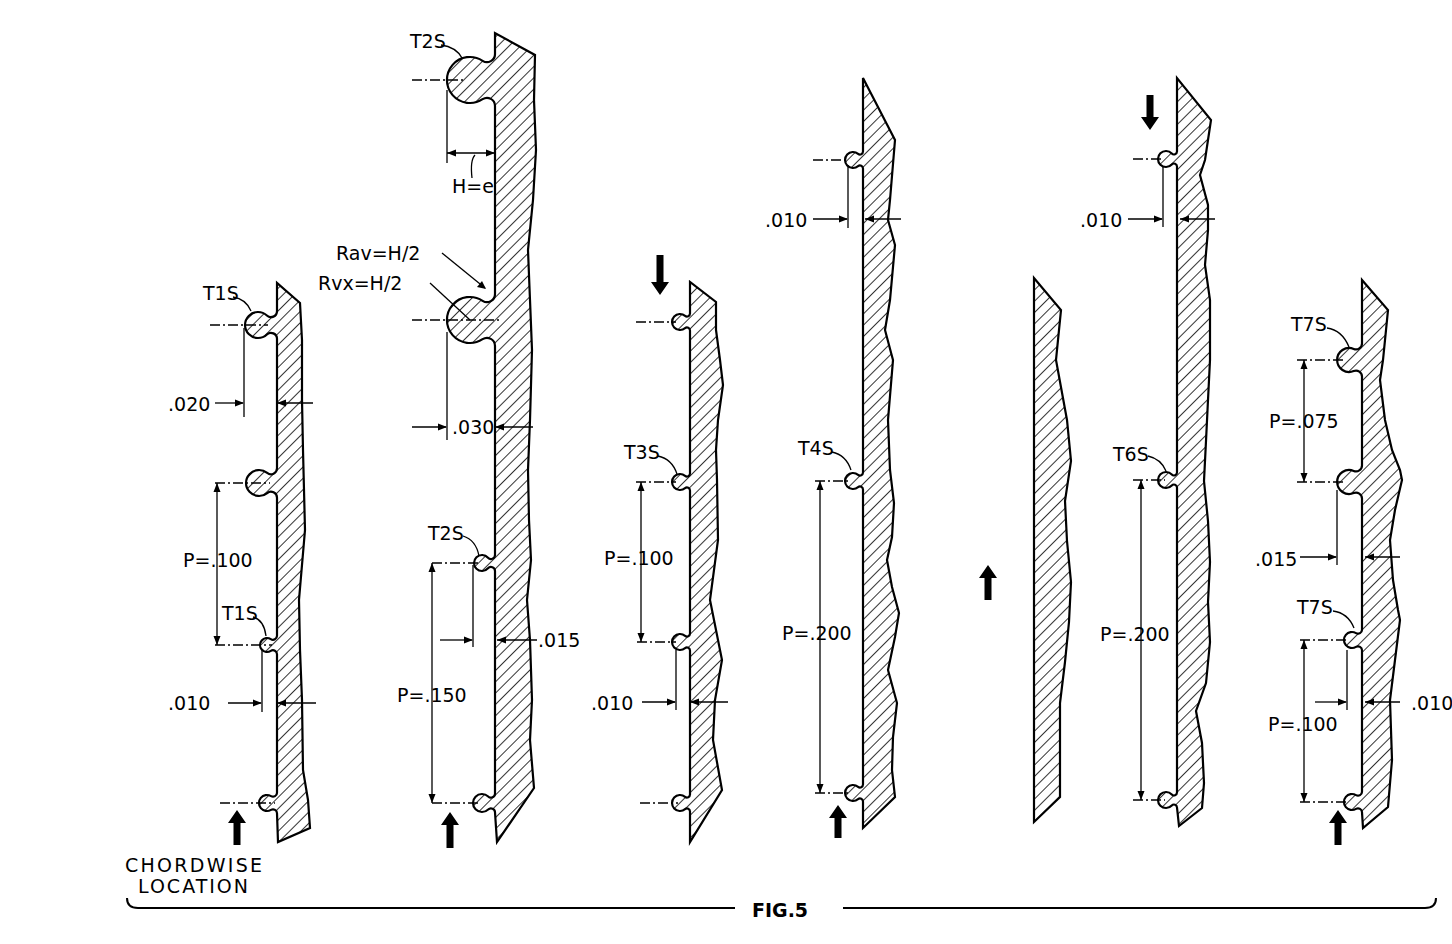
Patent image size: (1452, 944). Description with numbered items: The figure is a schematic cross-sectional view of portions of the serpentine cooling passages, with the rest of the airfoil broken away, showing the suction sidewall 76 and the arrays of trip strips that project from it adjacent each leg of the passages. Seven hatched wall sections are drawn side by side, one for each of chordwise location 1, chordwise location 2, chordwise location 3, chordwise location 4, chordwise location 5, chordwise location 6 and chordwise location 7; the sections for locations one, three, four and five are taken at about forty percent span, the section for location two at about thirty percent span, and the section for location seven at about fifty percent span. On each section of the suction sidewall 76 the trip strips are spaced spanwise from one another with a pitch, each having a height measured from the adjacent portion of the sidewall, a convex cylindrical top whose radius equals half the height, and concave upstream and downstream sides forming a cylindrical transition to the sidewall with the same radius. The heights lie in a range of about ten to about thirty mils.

The suction sidewall 76 is at (838, 457).
The chordwise location 1 is at (277, 582).
The chordwise location 2 is at (491, 457).
The chordwise location 3 is at (697, 582).
The chordwise location 4 is at (872, 480).
The chordwise location 5 is at (1052, 580).
The chordwise location 6 is at (1184, 480).
The chordwise location 7 is at (1369, 581).